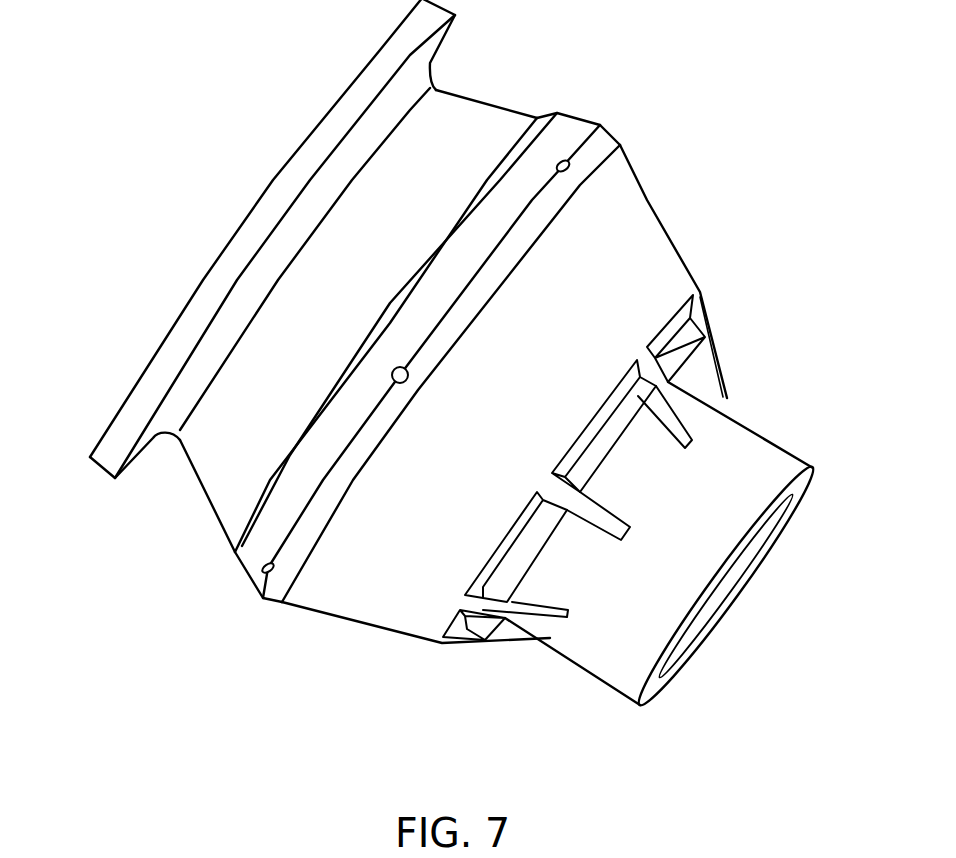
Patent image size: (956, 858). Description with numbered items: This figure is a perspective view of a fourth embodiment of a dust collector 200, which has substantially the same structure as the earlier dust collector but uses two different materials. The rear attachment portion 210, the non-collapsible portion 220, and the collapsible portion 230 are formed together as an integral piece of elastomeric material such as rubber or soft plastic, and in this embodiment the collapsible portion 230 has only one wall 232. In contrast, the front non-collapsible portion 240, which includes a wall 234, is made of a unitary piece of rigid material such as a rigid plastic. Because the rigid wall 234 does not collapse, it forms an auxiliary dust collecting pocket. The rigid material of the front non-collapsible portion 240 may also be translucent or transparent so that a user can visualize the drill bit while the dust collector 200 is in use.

The dust collector 200 is at (451, 364).
The rear attachment portion 210 is at (602, 663).
The non-collapsible portion 220 is at (512, 623).
The collapsible portion 230 is at (315, 611).
The wall 232 is at (402, 619).
The wall 234 is at (212, 460).
The front non-collapsible portion 240 is at (103, 458).